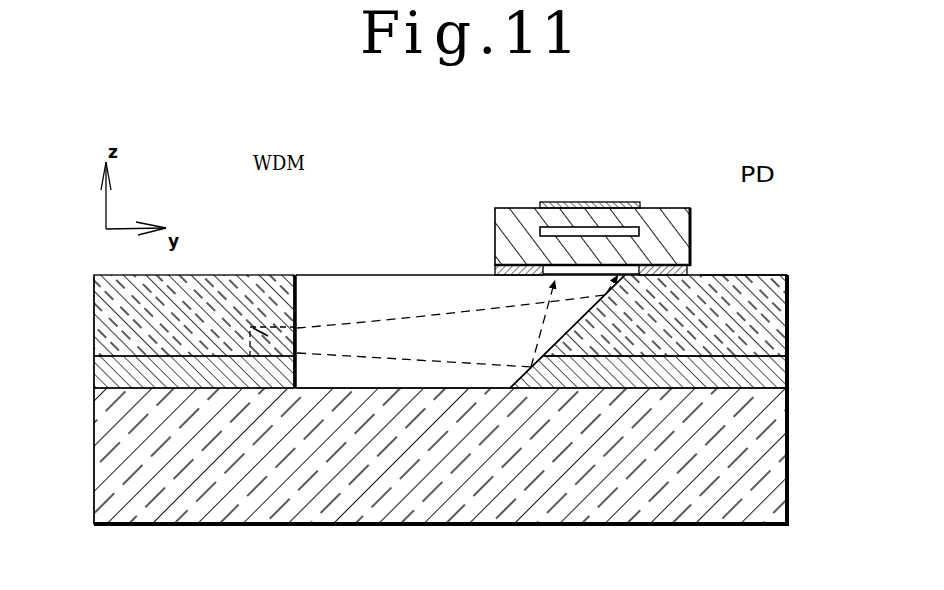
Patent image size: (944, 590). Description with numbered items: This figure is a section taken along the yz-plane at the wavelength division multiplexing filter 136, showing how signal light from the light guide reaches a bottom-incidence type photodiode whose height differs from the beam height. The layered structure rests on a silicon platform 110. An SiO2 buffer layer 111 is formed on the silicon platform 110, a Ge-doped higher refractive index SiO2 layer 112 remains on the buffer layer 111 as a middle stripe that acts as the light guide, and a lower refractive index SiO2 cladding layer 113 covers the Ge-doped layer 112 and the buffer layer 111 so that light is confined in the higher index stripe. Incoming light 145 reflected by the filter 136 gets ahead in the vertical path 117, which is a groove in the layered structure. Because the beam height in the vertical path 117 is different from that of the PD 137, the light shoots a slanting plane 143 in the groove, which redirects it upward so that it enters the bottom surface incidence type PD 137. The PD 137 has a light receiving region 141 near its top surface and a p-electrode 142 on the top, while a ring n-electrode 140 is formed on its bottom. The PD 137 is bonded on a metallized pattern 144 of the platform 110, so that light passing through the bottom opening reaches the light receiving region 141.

The silicon platform 110 is at (420, 516).
The SiO2 buffer layer 111 is at (148, 384).
The Ge-doped higher refractive index SiO2 layer 112 is at (256, 331).
The SiO2 cladding layer 113 is at (155, 332).
The vertical path 117 is at (402, 287).
The WDM filter 136 is at (262, 329).
The bottom surface incidence type PD 137 is at (521, 226).
The ring n-electrode 140 is at (690, 272).
The light receiving region 141 is at (585, 230).
The p-electrode 142 is at (573, 203).
The slanting plane 143 is at (579, 322).
The metallized pattern 144 is at (740, 296).
The incoming light 145 is at (538, 356).